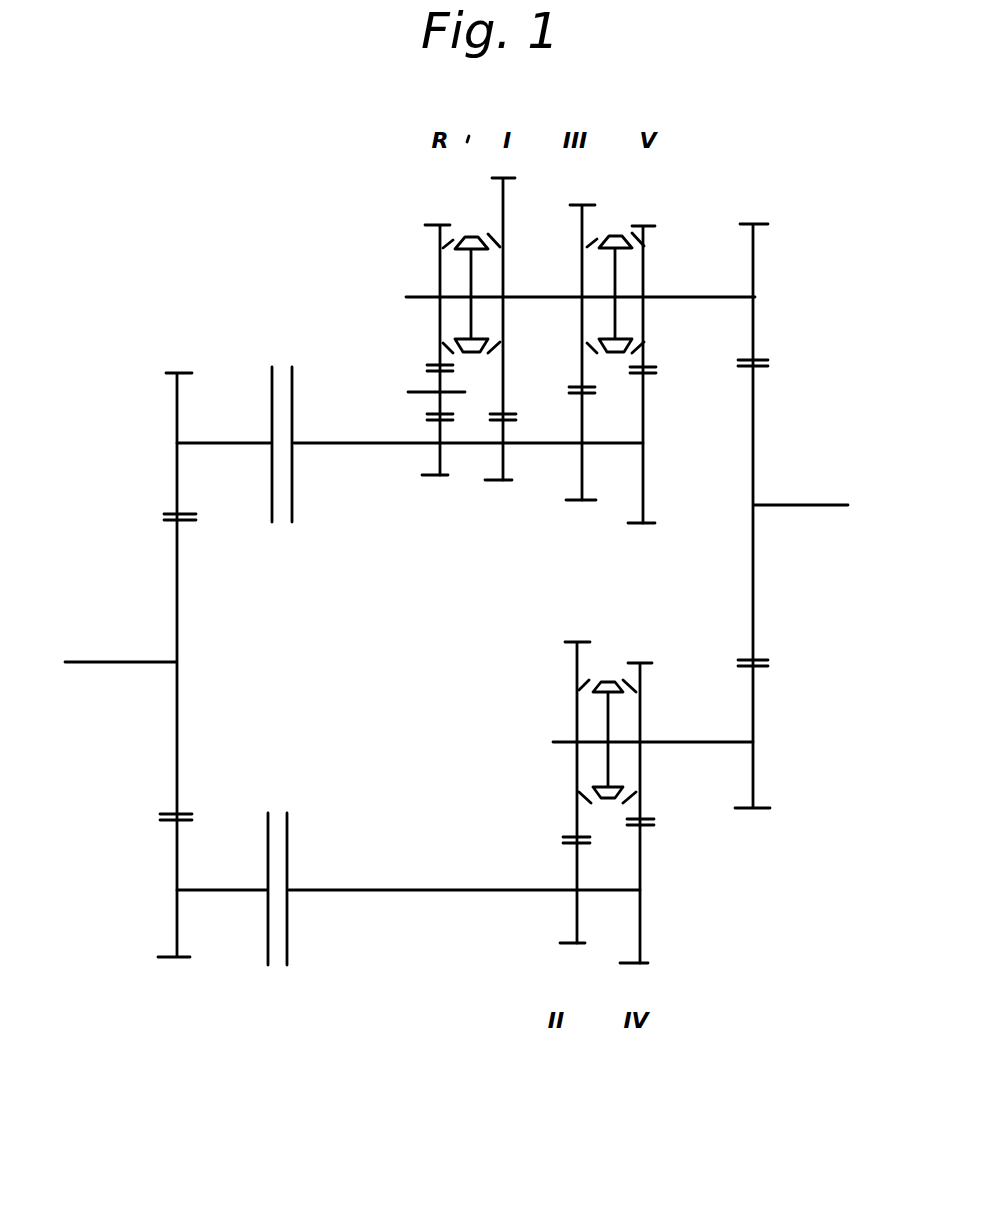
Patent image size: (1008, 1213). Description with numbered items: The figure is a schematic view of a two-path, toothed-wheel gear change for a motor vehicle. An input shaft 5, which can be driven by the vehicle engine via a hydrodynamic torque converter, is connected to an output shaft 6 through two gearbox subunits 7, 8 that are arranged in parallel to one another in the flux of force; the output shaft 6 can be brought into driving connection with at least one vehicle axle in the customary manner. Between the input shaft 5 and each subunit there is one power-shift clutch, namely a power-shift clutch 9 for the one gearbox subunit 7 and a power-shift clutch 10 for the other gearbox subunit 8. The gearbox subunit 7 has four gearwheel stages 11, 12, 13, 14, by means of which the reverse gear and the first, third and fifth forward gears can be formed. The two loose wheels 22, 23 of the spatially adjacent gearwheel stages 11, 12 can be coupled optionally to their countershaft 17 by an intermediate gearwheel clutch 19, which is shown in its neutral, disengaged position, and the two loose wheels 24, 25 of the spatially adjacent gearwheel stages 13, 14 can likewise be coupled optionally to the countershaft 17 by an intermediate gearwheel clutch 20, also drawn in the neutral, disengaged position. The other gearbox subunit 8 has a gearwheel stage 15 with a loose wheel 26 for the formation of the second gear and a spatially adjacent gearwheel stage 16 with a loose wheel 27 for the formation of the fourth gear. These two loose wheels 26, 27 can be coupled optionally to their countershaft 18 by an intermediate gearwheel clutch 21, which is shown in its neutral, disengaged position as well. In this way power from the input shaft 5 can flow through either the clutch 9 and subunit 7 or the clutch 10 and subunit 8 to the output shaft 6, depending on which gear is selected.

The input shaft 5 is at (118, 652).
The output shaft 6 is at (808, 512).
The gearbox subunit 7 is at (658, 188).
The gearbox subunit 8 is at (673, 878).
The power-shift clutch 9 is at (282, 536).
The power-shift clutch 10 is at (276, 800).
The gearwheel stage 11 is at (435, 480).
The gearwheel stage 12 is at (498, 486).
The gearwheel stage 13 is at (575, 508).
The gearwheel stage 14 is at (640, 532).
The gearwheel stage 15 is at (568, 950).
The gearwheel stage 16 is at (641, 973).
The countershaft 17 is at (700, 300).
The countershaft 18 is at (685, 740).
The intermediate gearwheel clutch 19 is at (469, 228).
The intermediate gearwheel clutch 20 is at (614, 228).
The intermediate gearwheel clutch 21 is at (606, 812).
The loose wheel 22 is at (440, 270).
The loose wheel 23 is at (503, 272).
The loose wheel 24 is at (582, 330).
The loose wheel 25 is at (643, 270).
The loose wheel 26 is at (577, 670).
The loose wheel 27 is at (642, 765).